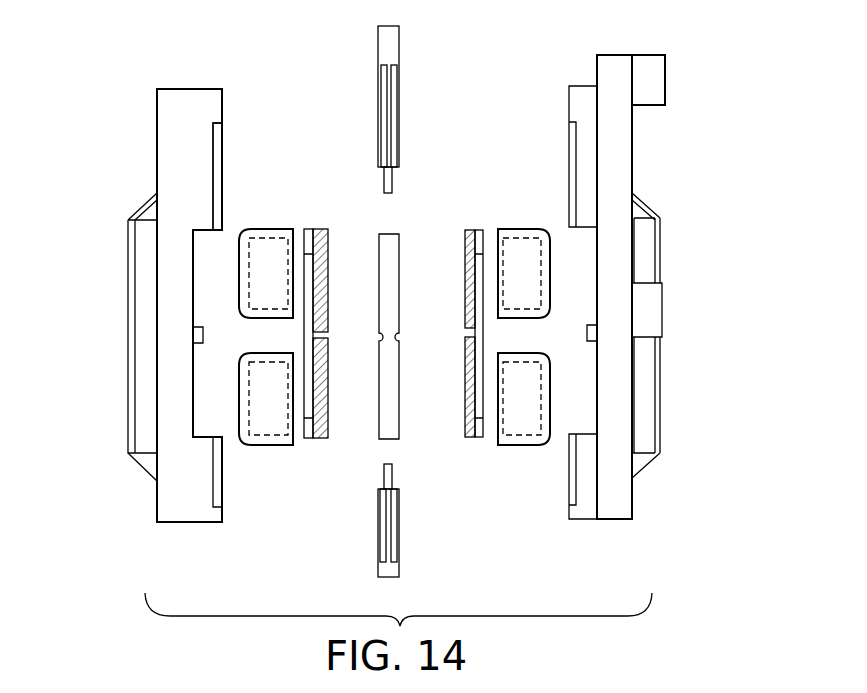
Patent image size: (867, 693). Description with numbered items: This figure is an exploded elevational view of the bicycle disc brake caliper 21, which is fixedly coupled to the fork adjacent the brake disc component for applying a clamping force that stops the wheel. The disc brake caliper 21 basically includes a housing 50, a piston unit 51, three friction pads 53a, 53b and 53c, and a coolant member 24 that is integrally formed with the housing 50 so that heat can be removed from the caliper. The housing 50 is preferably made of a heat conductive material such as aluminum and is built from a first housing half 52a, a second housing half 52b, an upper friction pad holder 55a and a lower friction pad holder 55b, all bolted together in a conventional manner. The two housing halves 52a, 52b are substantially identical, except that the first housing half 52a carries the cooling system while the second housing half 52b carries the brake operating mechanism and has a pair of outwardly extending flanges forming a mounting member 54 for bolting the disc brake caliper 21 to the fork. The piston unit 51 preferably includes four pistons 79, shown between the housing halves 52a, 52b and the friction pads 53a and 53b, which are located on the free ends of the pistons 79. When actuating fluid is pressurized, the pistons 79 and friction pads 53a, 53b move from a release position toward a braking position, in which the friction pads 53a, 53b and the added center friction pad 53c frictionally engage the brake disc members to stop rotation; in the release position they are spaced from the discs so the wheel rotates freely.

The disc brake caliper 21 is at (683, 103).
The coolant member 24 is at (222, 100).
The housing 50 is at (192, 80).
The piston unit 51 is at (453, 172).
The first housing half 52a is at (128, 253).
The second housing half 52b is at (663, 250).
The friction pad 53a is at (310, 229).
The friction pad 53b is at (470, 230).
The center friction pad 53c is at (383, 234).
The mounting member 54 is at (632, 55).
The upper friction pad holder 55a is at (399, 45).
The lower friction pad holder 55b is at (399, 566).
The pistons 79 is at (265, 229).